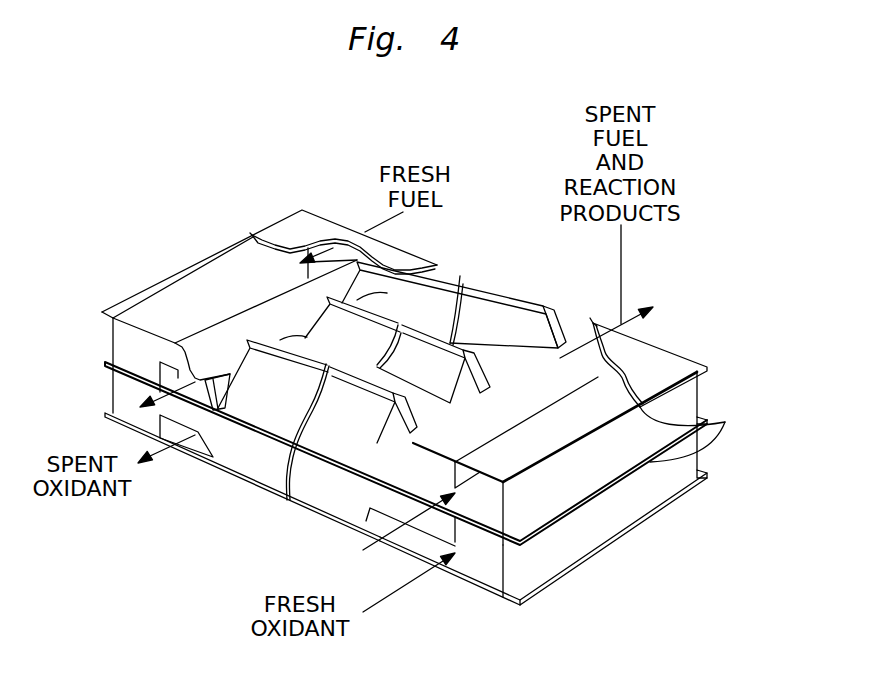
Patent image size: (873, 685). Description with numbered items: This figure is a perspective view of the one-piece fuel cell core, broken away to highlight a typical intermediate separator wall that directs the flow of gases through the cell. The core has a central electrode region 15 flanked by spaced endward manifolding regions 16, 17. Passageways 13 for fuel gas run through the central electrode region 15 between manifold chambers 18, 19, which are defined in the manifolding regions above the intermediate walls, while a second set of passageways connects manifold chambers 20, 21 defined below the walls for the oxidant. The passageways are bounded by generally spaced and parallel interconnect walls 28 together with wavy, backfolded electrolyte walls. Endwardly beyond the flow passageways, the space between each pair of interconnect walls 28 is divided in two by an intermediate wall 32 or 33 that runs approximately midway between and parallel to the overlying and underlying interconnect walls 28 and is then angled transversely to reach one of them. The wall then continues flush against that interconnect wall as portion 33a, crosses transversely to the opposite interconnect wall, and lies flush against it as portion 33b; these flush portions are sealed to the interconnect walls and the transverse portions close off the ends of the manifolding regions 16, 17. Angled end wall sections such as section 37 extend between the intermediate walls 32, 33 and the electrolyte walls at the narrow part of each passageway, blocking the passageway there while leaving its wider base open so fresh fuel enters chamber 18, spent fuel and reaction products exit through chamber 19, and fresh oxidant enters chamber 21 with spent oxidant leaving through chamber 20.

The passageways 13 is at (432, 302).
The central electrode region 15 is at (263, 488).
The manifolding region 16 is at (127, 423).
The manifolding region 17 is at (457, 572).
The manifold chamber 18 is at (240, 285).
The manifold chamber 19 is at (573, 375).
The manifold chamber 20 is at (200, 438).
The manifold chamber 21 is at (490, 561).
The interconnect walls 28 is at (297, 242).
The intermediate wall 32 is at (263, 325).
The intermediate wall 33 is at (380, 455).
The intermediate wall portion 33a is at (543, 439).
The intermediate wall portion 33b is at (540, 580).
The angled end wall section 37 is at (557, 318).